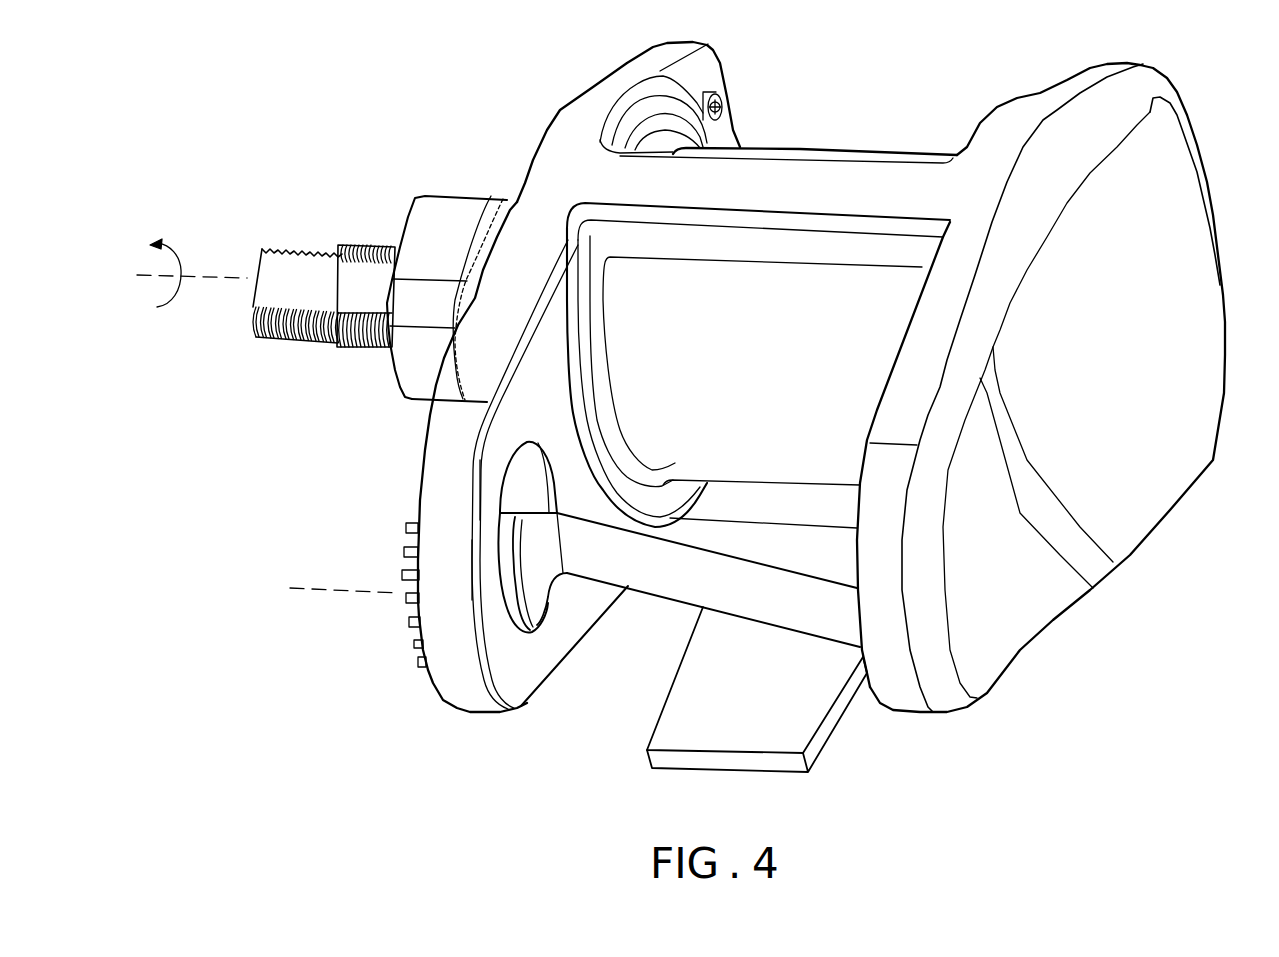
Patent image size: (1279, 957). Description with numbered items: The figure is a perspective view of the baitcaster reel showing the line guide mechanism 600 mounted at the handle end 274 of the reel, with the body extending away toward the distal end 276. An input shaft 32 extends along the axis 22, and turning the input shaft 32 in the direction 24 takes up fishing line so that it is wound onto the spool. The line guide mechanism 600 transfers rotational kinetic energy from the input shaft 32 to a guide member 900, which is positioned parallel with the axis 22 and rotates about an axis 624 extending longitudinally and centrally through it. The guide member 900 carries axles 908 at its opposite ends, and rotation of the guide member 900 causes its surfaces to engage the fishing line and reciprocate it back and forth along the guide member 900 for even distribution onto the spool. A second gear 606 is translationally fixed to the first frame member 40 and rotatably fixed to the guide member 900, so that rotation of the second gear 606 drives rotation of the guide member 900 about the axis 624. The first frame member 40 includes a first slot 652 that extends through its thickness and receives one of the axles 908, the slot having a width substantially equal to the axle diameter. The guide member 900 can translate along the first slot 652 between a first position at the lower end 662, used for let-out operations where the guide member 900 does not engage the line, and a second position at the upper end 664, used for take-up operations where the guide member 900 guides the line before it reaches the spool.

The axis 22 is at (218, 280).
The direction 24 is at (187, 244).
The input shaft 32 is at (352, 347).
The first frame member 40 is at (520, 462).
The handle end 274 is at (503, 132).
The distal end 276 is at (1228, 157).
The line guide mechanism 600 is at (351, 606).
The second gear 606 is at (420, 650).
The axis 624 is at (333, 592).
The first slot 652 is at (540, 483).
The lower end 662 is at (523, 661).
The upper end 664 is at (478, 470).
The guide member 900 is at (680, 583).
The axles 908 is at (547, 612).